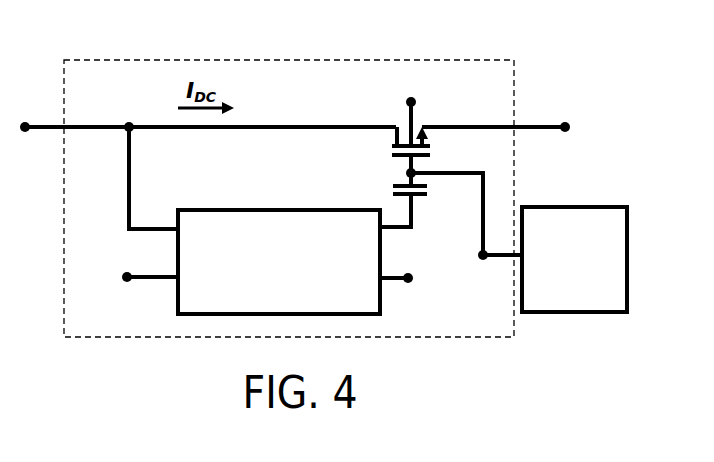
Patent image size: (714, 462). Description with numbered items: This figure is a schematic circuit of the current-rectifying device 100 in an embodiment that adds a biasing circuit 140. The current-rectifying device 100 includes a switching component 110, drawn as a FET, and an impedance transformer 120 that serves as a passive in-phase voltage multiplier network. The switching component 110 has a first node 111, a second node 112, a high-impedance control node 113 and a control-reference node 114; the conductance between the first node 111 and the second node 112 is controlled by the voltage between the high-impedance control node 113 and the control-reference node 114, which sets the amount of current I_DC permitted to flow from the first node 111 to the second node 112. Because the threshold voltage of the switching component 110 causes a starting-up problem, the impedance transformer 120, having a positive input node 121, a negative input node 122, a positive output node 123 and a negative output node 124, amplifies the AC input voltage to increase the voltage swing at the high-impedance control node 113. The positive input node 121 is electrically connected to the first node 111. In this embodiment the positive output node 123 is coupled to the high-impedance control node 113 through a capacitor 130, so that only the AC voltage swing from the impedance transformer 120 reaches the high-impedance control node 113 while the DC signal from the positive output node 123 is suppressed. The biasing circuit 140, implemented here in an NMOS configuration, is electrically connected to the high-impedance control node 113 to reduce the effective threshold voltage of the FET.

The current-rectifying device 100 is at (289, 188).
The switching component 110 is at (432, 134).
The first node 111 is at (208, 115).
The second node 112 is at (496, 115).
The high-impedance control node 113 is at (443, 210).
The control-reference node 114 is at (413, 89).
The impedance transformer 120 is at (279, 262).
The positive input node 121 is at (129, 185).
The negative input node 122 is at (129, 278).
The positive output node 123 is at (401, 226).
The negative output node 124 is at (401, 293).
The capacitor 130 is at (428, 192).
The biasing circuit 140 is at (574, 259).